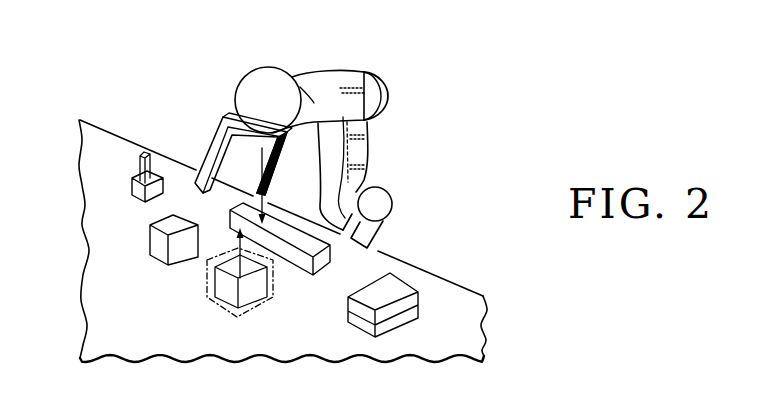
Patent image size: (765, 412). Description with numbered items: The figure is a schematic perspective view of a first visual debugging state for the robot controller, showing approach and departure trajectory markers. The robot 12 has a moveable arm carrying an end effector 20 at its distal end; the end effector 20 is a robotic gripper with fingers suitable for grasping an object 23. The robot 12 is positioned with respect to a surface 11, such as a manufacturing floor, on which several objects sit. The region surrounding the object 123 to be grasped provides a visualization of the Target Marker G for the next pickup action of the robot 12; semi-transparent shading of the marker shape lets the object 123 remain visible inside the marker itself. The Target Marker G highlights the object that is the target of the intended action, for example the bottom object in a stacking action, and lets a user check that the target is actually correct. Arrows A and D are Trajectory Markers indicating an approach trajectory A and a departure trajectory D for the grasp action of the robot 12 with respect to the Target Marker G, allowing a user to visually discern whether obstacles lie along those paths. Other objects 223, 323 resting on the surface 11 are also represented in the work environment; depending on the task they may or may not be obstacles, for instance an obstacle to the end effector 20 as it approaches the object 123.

The surface 11 is at (445, 306).
The robot 12 is at (368, 48).
The end effector 20 is at (212, 150).
The object 23 is at (332, 259).
The object 123 is at (150, 240).
The object 223 is at (398, 346).
The object 323 is at (132, 181).
The approach trajectory A is at (264, 212).
The departure trajectory D is at (207, 264).
The Target Marker G is at (275, 280).